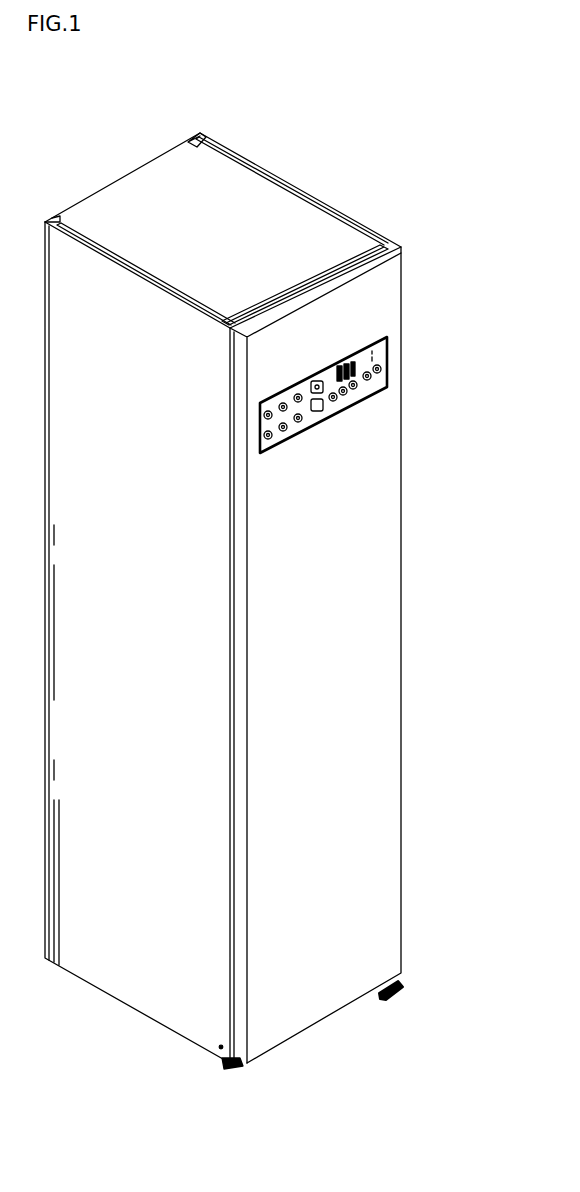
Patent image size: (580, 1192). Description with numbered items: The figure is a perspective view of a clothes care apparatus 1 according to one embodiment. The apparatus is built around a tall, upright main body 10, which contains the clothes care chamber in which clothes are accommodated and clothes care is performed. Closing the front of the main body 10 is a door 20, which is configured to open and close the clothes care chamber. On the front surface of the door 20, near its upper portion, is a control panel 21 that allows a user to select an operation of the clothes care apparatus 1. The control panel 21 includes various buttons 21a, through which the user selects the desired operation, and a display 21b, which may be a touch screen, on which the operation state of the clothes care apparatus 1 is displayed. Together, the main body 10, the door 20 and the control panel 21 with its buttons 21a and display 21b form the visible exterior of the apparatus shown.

The clothes care apparatus 1 is at (233, 86).
The main body 10 is at (290, 179).
The door 20 is at (388, 577).
The control panel 21 is at (388, 345).
The buttons 21a is at (358, 389).
The display 21b is at (298, 424).